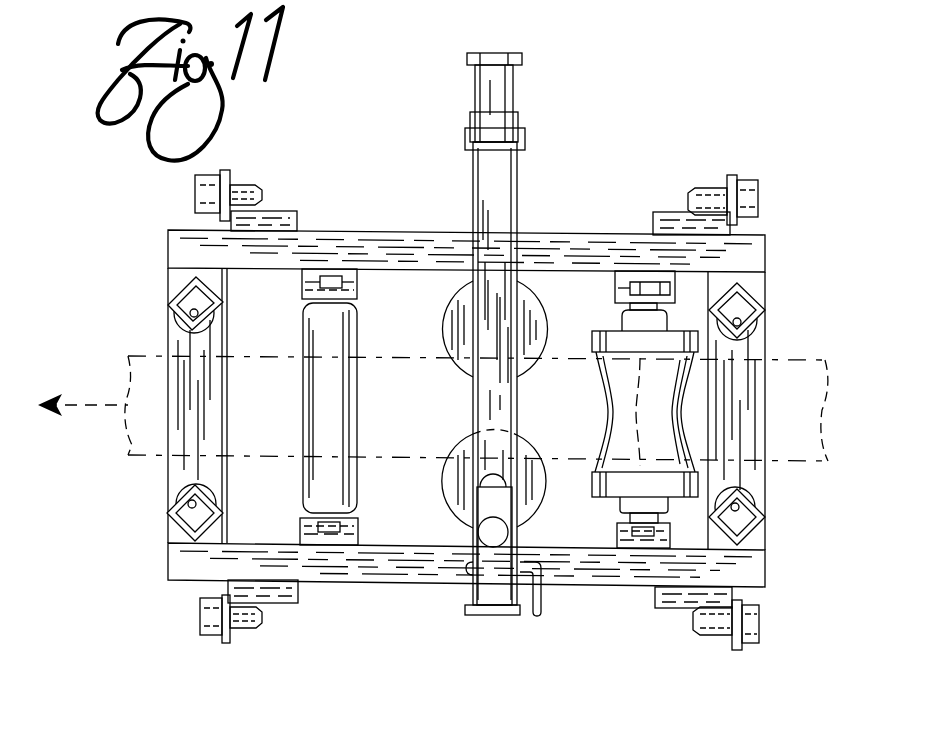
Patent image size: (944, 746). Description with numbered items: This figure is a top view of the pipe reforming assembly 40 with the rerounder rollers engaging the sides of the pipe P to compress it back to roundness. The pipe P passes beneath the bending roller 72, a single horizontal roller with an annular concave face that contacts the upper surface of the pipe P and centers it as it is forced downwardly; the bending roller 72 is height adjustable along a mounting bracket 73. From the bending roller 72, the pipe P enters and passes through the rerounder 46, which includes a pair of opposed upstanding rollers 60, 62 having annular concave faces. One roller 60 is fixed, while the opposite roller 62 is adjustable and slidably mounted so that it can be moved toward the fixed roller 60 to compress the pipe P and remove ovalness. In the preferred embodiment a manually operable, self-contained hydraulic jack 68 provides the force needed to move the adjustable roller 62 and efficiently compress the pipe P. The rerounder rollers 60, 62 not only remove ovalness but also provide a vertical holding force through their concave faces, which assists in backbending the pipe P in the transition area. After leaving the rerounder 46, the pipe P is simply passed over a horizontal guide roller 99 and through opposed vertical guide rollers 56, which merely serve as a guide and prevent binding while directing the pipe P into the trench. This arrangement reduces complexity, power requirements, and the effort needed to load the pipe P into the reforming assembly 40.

The reforming assembly 40 is at (638, 118).
The rerounder 46 is at (540, 86).
The vertical guide rollers 56 is at (183, 330).
The fixed roller 60 is at (528, 517).
The adjustable roller 62 is at (555, 250).
The hydraulic jack 68 is at (487, 96).
The bending roller 72 is at (660, 478).
The mounting bracket 73 is at (628, 250).
The horizontal guide roller 99 is at (327, 320).
The pipe P is at (128, 450).